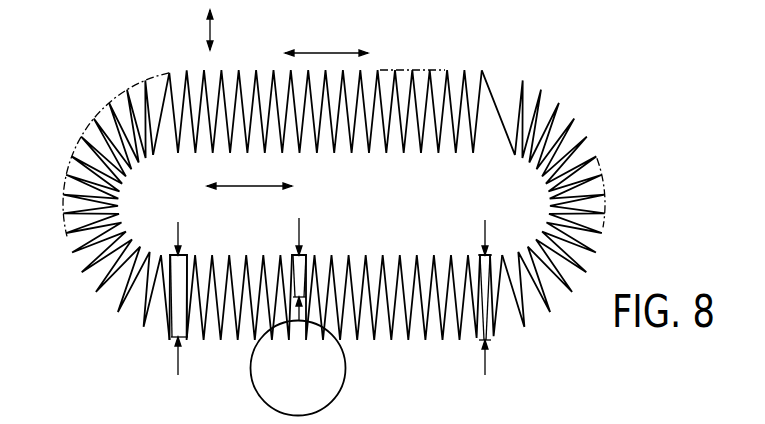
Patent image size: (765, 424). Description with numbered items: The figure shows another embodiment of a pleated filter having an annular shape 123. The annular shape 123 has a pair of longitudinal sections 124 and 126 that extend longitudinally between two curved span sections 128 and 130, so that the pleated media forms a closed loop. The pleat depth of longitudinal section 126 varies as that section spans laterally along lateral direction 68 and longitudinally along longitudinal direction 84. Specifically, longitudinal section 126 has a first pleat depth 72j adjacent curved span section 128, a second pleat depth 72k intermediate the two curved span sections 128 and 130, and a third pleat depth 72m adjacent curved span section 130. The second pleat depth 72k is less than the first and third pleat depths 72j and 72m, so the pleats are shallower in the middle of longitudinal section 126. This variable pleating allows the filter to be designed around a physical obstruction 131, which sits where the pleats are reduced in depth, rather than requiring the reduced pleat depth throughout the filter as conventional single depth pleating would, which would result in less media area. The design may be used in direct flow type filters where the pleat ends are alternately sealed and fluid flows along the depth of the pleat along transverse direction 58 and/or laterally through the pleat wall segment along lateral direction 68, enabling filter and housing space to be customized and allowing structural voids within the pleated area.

The transverse direction 58 is at (208, 30).
The lateral direction 68 is at (327, 52).
The longitudinal direction 84 is at (262, 186).
The annular shape 123 is at (130, 88).
The longitudinal section 124 is at (430, 70).
The longitudinal section 126 is at (468, 4).
The curved span section 128 is at (63, 197).
The curved span section 130 is at (605, 200).
The first pleat depth 72j is at (178, 368).
The second pleat depth 72k is at (300, 228).
The third pleat depth 72m is at (485, 368).
The physical obstruction 131 is at (343, 350).